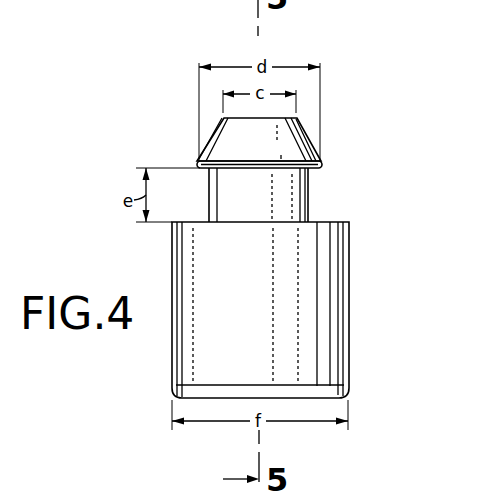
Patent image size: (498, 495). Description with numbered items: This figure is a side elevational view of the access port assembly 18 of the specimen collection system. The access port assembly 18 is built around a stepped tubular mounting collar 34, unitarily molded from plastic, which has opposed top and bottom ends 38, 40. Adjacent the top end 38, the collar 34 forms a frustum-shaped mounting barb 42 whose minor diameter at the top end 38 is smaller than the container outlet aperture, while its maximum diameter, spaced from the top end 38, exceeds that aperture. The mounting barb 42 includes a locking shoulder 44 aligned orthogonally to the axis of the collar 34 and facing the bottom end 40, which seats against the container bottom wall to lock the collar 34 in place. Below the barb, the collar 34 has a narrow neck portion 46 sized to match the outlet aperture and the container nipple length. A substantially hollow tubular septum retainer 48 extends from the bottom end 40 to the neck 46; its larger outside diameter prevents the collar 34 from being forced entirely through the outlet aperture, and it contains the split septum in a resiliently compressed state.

The access port assembly 18 is at (368, 207).
The stepped tubular mounting collar 34 is at (360, 242).
The top end 38 is at (298, 117).
The bottom end 40 is at (200, 398).
The mounting barb 42 is at (200, 130).
The locking shoulder 44 is at (205, 169).
The neck portion 46 is at (309, 191).
The septum retainer 48 is at (348, 357).